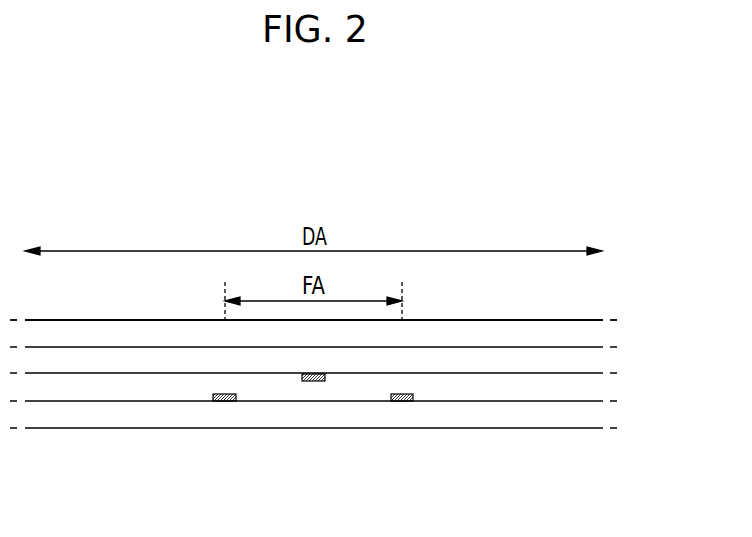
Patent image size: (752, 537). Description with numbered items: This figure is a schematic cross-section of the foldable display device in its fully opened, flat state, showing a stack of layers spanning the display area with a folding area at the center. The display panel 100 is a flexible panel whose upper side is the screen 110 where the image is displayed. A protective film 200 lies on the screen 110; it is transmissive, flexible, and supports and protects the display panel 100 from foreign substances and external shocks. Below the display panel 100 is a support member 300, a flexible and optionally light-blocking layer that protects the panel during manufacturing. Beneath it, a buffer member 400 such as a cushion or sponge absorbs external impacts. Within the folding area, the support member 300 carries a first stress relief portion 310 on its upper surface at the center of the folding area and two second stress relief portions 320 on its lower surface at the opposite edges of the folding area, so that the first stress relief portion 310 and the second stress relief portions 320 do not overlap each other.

The screen 110 is at (550, 346).
The protective film 200 is at (594, 336).
The display panel 100 is at (594, 362).
The support member 300 is at (594, 389).
The first stress relief portion 310 is at (316, 381).
The second stress relief portion 320 is at (226, 401).
The buffer member 400 is at (594, 416).